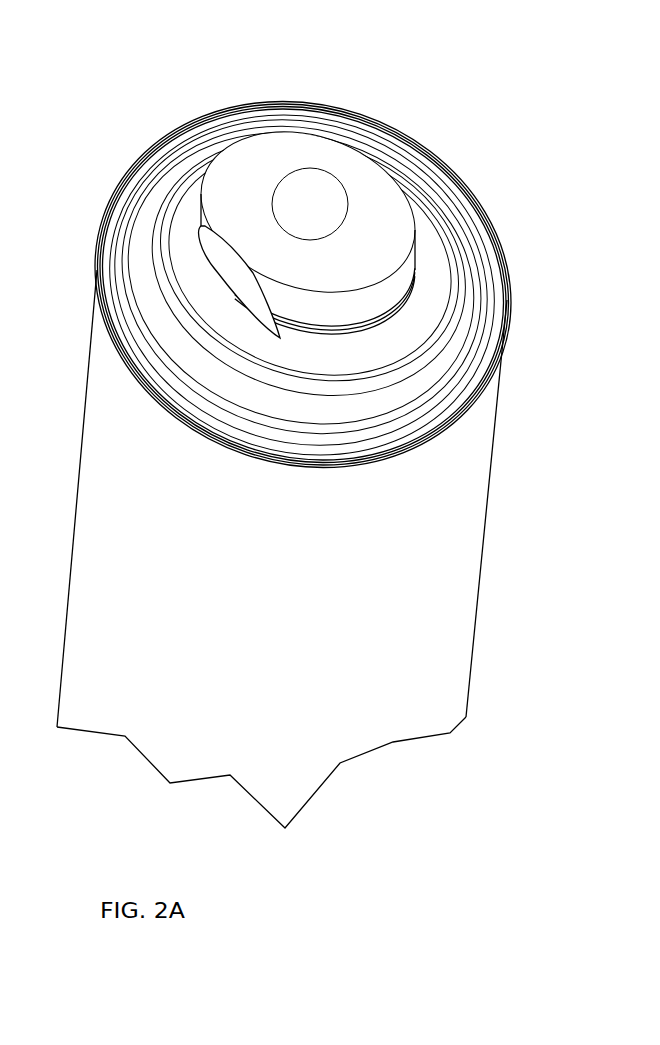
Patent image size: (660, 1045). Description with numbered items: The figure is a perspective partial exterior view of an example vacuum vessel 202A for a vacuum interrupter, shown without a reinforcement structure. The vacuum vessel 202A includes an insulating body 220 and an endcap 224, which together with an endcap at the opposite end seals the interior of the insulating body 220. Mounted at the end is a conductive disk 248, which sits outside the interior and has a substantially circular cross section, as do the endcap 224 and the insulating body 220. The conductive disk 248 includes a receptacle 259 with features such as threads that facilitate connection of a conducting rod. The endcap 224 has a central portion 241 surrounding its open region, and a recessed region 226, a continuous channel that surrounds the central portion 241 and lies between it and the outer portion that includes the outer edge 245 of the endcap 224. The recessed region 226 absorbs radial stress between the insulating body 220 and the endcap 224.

The vacuum vessel 202A is at (318, 429).
The insulating body 220 is at (473, 618).
The endcap 224 is at (437, 333).
The recessed region 226 is at (166, 200).
The central portion 241 is at (225, 357).
The outer edge 245 is at (490, 268).
The conductive disk 248 is at (380, 207).
The receptacle 259 is at (298, 197).